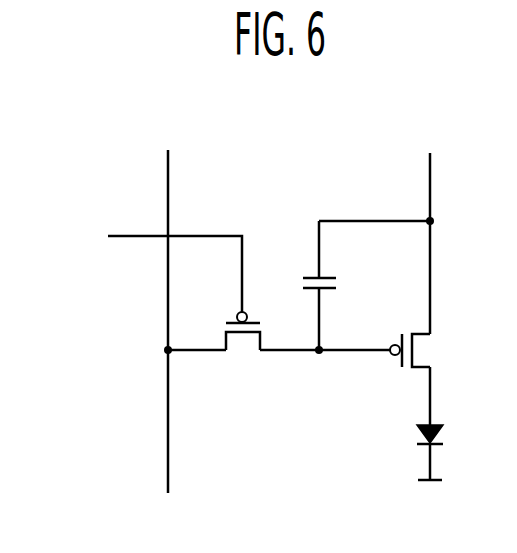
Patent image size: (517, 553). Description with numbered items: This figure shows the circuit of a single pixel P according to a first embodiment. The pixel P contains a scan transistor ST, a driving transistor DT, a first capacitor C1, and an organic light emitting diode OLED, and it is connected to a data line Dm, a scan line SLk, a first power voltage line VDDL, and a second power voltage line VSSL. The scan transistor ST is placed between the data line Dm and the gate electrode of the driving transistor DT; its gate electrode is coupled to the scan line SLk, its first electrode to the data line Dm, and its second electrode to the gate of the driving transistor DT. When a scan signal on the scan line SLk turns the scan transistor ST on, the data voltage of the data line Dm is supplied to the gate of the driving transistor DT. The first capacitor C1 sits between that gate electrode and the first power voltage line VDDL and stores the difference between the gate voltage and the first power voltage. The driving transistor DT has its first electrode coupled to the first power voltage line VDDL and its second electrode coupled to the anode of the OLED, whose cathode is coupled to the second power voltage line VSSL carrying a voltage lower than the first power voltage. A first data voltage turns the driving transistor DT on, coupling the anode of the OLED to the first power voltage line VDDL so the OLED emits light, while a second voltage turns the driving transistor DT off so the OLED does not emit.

The pixel P is at (50, 129).
The data line Dm is at (164, 306).
The scan line SLk is at (156, 266).
The first power voltage line VDDL is at (443, 152).
The scan transistor ST is at (241, 347).
The first capacitor C1 is at (333, 287).
The driving transistor DT is at (388, 379).
The organic light emitting diode OLED is at (403, 449).
The second power voltage line VSSL is at (430, 498).